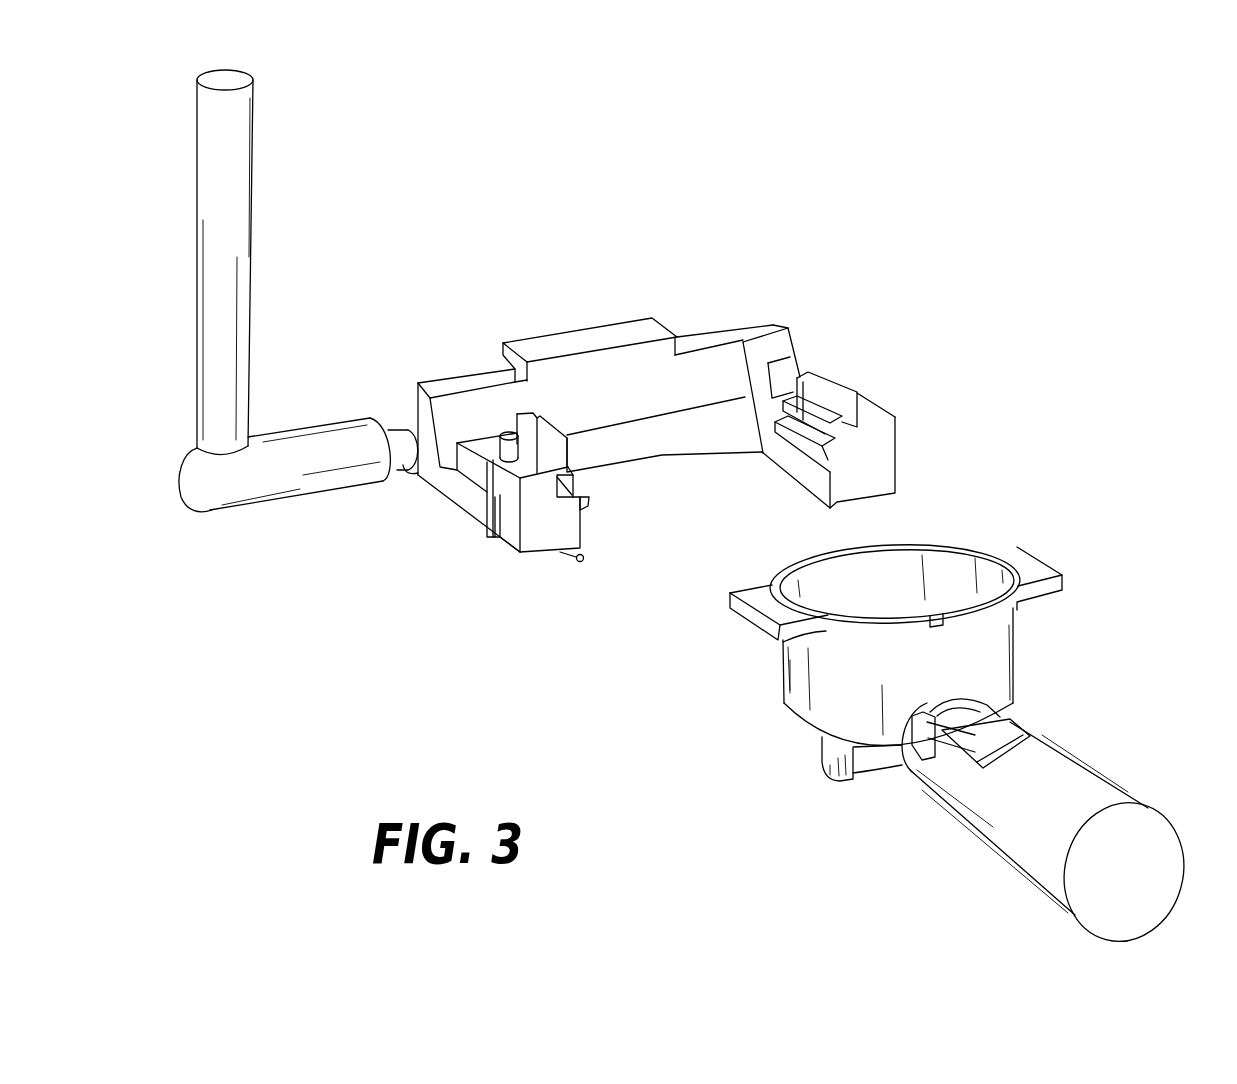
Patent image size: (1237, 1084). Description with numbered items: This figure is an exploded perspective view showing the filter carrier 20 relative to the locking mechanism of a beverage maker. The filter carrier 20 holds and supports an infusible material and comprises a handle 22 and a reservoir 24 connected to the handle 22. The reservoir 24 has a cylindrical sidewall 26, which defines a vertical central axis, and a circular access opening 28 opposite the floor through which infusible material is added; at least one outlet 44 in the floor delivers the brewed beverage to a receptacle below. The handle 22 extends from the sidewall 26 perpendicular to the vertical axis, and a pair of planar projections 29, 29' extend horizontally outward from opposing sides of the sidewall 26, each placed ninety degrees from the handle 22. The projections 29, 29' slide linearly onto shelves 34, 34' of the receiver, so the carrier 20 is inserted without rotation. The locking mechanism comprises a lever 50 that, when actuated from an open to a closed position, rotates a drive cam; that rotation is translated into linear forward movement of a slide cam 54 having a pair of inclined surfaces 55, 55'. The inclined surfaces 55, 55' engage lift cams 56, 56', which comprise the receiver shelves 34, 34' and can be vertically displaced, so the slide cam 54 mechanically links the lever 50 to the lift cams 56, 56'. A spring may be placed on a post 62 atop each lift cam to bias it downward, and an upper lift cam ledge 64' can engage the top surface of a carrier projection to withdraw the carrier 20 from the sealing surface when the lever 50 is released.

The filter carrier 20 is at (1131, 789).
The handle 22 is at (1053, 817).
The reservoir 24 is at (939, 572).
The cylindrical sidewall 26 is at (863, 693).
The circular access opening 28 is at (905, 557).
The planar projection 29 is at (764, 591).
The planar projection 29' is at (1078, 559).
The shelf 34 is at (617, 524).
The shelf 34' is at (781, 454).
The outlet 44 is at (830, 787).
The lever 50 is at (243, 296).
The slide cam 54 is at (754, 332).
The inclined surface 55 is at (423, 401).
The inclined surface 55' is at (814, 362).
The lift cam 56 is at (523, 524).
The lift cam 56' is at (917, 439).
The post 62 is at (498, 442).
The upper lift cam ledge 64' is at (755, 409).